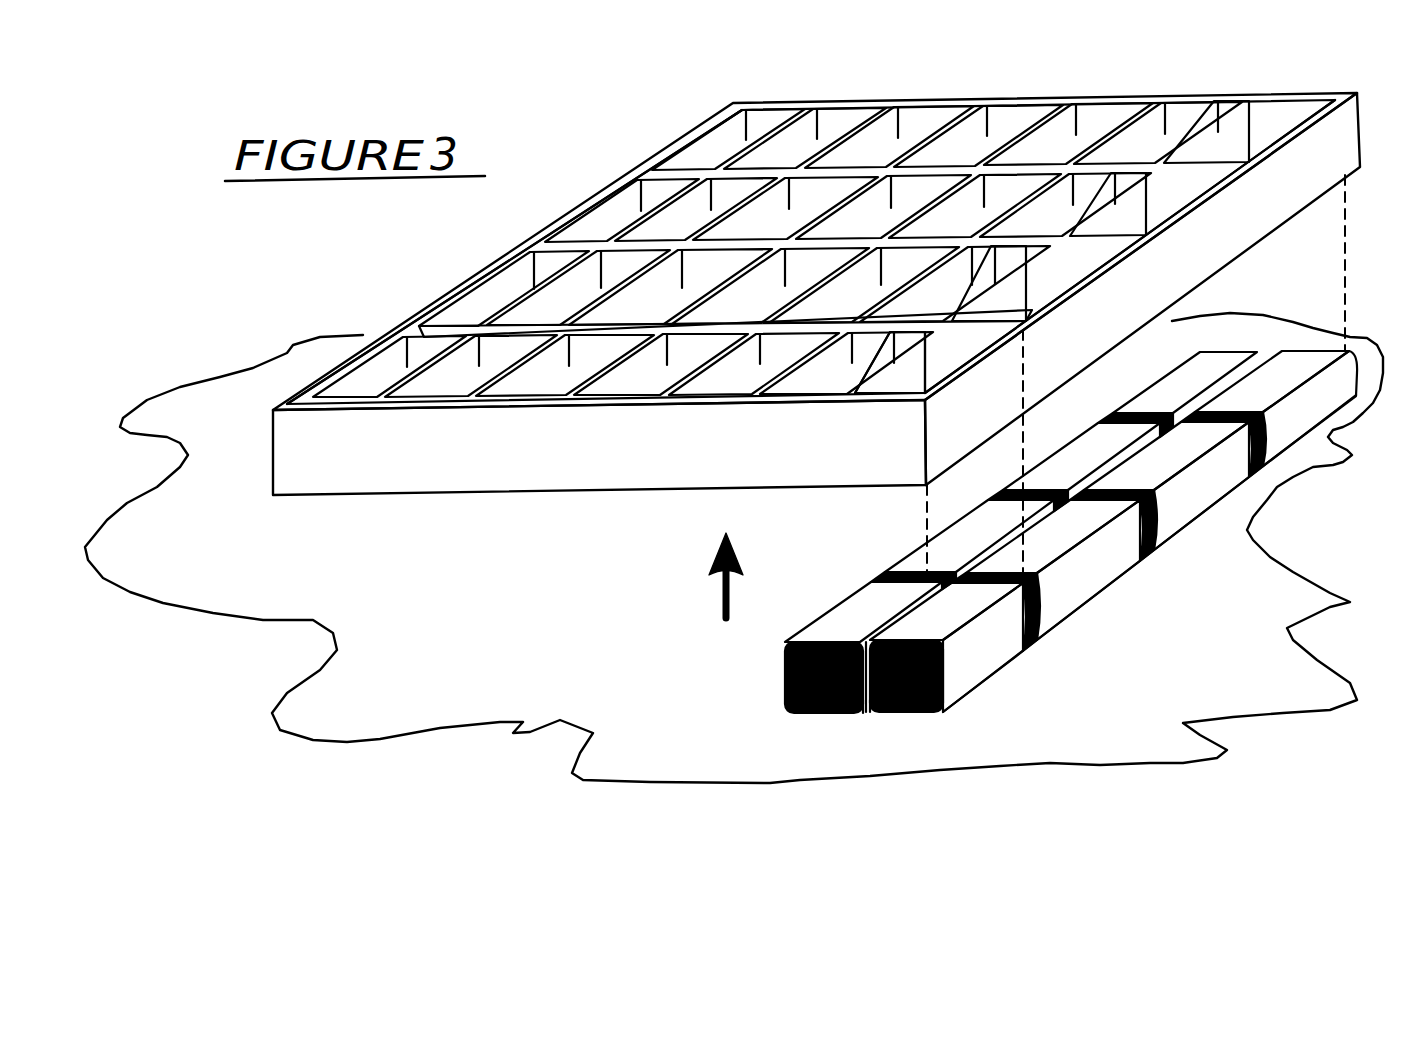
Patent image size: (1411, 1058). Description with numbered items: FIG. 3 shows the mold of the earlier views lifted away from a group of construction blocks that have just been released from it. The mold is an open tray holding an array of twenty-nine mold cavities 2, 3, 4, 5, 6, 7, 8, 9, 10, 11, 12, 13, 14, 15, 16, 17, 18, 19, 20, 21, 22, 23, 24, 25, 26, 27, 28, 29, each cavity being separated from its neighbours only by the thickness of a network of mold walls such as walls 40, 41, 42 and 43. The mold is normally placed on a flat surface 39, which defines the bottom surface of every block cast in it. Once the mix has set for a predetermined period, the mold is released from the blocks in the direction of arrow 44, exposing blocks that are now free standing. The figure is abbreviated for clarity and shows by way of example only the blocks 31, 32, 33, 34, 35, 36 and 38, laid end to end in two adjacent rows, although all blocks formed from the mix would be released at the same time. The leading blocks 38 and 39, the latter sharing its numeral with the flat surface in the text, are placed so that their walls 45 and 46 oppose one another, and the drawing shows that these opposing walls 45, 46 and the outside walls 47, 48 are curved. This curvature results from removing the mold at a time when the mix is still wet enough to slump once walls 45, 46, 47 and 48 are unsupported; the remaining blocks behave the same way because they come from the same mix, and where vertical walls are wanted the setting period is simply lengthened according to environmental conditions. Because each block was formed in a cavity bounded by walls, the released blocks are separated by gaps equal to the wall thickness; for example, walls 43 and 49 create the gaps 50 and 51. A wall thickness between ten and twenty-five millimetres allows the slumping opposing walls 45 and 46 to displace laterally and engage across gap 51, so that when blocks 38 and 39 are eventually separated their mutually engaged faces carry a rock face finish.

The mold cavity 2 is at (728, 139).
The mold cavity 3 is at (805, 138).
The mold cavity 4 is at (889, 137).
The mold cavity 5 is at (978, 136).
The mold cavity 6 is at (1068, 134).
The mold cavity 7 is at (1158, 133).
The mold cavity 8 is at (1206, 132).
The mold cavity 9 is at (622, 210).
The mold cavity 10 is at (696, 209).
The mold cavity 11 is at (785, 208).
The mold cavity 12 is at (883, 207).
The mold cavity 13 is at (975, 206).
The mold cavity 14 is at (1065, 205).
The mold cavity 15 is at (1108, 204).
The mold cavity 16 is at (504, 288).
The mold cavity 17 is at (578, 287).
The mold cavity 18 is at (670, 287).
The mold cavity 19 is at (770, 286).
The mold cavity 20 is at (864, 285).
The mold cavity 21 is at (955, 284).
The mold cavity 22 is at (998, 283).
The mold cavity 23 is at (389, 366).
The mold cavity 24 is at (471, 366).
The mold cavity 25 is at (565, 365).
The mold cavity 26 is at (661, 364).
The mold cavity 27 is at (754, 364).
The mold cavity 28 is at (846, 363).
The mold cavity 29 is at (893, 362).
The block 31 is at (1236, 312).
The block 32 is at (1342, 330).
The block 33 is at (1074, 467).
The block 34 is at (1159, 491).
The block 35 is at (962, 544).
The block 36 is at (1045, 575).
The leading block 38 is at (946, 647).
The flat surface 39 is at (563, 692).
The wall 40 is at (427, 307).
The wall 41 is at (552, 241).
The wall 42 is at (480, 327).
The wall 43 is at (412, 327).
The arrow 44 is at (707, 588).
The opposing wall 45 is at (870, 707).
The opposing wall 46 is at (863, 707).
The outside wall 47 is at (943, 673).
The outside wall 48 is at (770, 673).
The wall 49 is at (867, 378).
The gap 50 is at (1040, 638).
The gap 51 is at (866, 652).